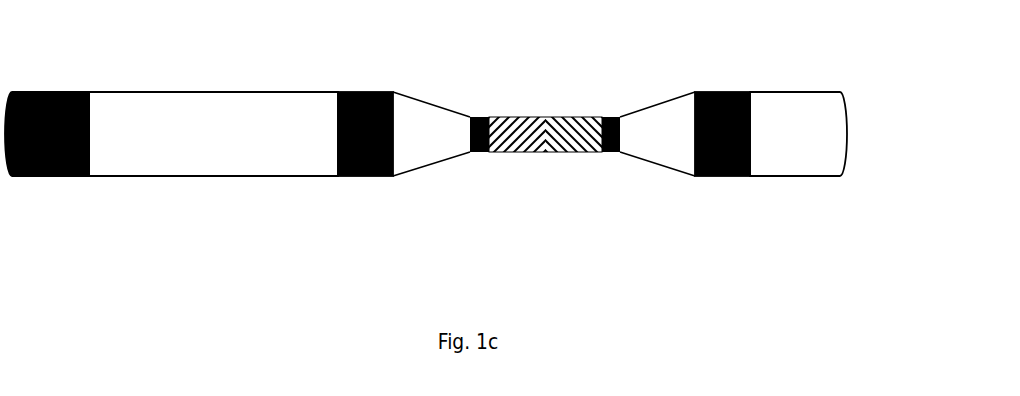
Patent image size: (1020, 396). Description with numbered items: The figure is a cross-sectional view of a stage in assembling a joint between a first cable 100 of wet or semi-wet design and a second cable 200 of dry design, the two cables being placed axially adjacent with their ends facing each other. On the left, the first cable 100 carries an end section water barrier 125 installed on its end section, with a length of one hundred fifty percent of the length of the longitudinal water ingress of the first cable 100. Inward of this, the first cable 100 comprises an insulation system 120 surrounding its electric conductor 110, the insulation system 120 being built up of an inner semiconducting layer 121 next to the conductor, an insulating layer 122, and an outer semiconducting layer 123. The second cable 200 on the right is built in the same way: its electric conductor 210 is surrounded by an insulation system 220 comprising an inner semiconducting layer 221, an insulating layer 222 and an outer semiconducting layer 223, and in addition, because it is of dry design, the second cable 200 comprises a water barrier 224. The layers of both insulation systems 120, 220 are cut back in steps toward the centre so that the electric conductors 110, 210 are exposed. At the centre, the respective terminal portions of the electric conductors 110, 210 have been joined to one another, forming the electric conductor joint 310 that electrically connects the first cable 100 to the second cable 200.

The first cable 100 is at (123, 78).
The second cable 200 is at (838, 78).
The electric conductor joint 310 is at (487, 56).
The electric conductor 110 is at (513, 130).
The electric conductor 210 is at (583, 130).
The insulation system 120 is at (353, 274).
The inner semiconducting layer 121 is at (480, 154).
The insulating layer 122 is at (436, 143).
The outer semiconducting layer 123 is at (360, 177).
The end section water barrier 125 is at (209, 177).
The insulation system 220 is at (738, 278).
The inner semiconducting layer 221 is at (610, 154).
The insulating layer 222 is at (663, 143).
The outer semiconducting layer 223 is at (723, 177).
The water barrier 224 is at (807, 177).